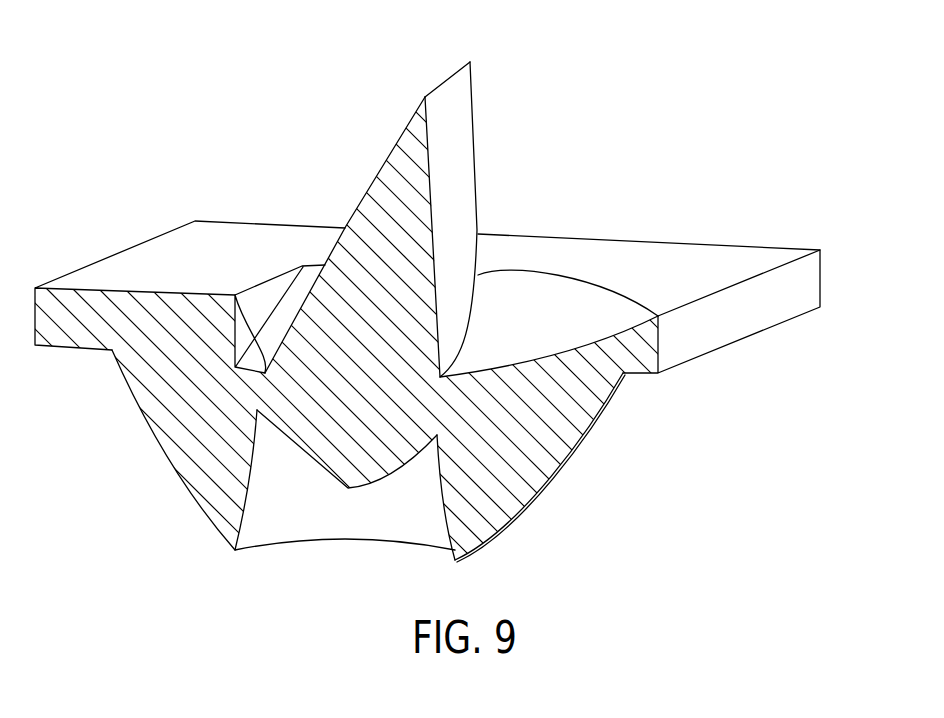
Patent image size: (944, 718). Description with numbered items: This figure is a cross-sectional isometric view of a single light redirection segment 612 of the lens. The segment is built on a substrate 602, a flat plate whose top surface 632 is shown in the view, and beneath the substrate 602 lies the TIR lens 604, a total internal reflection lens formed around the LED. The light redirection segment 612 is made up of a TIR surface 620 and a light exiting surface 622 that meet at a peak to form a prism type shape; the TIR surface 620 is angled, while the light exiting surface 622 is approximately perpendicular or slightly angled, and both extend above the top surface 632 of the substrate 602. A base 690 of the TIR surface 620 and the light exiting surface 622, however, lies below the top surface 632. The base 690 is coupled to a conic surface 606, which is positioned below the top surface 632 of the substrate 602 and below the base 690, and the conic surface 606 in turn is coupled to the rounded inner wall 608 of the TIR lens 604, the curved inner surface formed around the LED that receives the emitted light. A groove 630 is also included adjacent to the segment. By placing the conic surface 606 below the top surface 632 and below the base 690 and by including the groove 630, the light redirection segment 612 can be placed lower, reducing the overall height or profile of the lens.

The substrate 602 is at (822, 280).
The TIR lens 604 is at (557, 477).
The conic surface 606 is at (333, 485).
The rounded inner wall 608 is at (250, 507).
The light redirection segment 612 is at (463, 68).
The TIR surface 620 is at (375, 183).
The light exiting surface 622 is at (465, 153).
The groove 630 is at (478, 327).
The top surface 632 is at (750, 258).
The base 690 is at (235, 295).